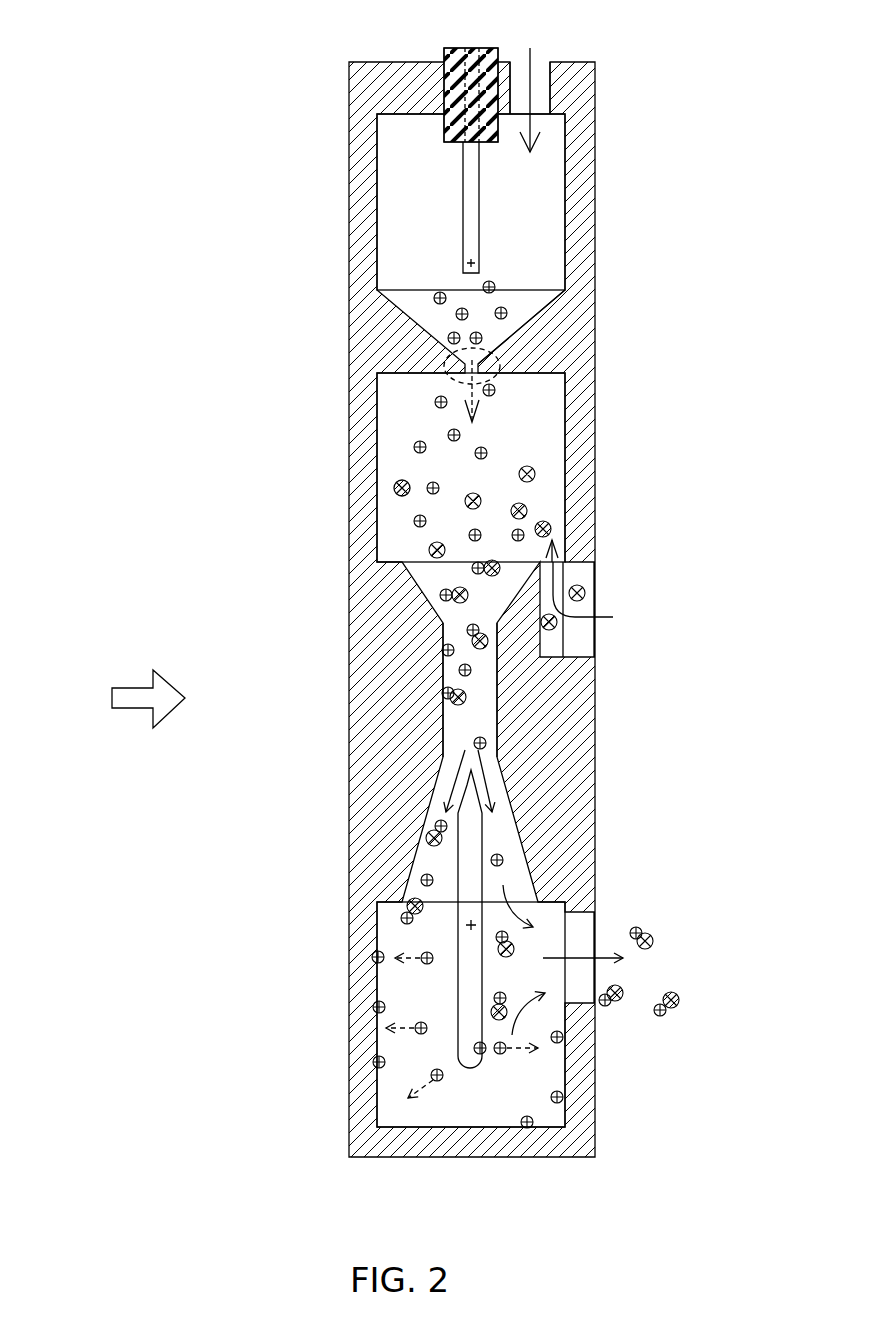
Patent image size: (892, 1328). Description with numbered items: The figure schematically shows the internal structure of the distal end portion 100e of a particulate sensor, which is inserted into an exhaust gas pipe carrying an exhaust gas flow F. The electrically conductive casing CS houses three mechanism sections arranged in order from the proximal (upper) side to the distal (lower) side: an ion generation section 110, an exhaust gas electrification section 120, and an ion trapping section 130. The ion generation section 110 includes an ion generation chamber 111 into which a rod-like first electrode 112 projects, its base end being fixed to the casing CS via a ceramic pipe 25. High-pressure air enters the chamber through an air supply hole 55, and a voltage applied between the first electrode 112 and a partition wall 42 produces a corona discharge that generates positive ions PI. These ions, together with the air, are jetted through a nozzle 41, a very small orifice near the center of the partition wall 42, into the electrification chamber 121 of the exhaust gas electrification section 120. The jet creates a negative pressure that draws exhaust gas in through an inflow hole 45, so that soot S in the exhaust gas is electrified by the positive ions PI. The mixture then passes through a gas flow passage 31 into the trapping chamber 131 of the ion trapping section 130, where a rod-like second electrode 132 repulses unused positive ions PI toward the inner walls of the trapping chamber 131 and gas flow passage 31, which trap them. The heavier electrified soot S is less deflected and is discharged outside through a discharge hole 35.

The distal end portion 100e is at (240, 238).
The ion generation section 110 is at (660, 226).
The ion generation chamber 111 is at (430, 174).
The first electrode 112 is at (482, 212).
The exhaust gas electrification section 120 is at (660, 458).
The electrification chamber 121 is at (422, 410).
The ion trapping section 130 is at (645, 1060).
The trapping chamber 131 is at (490, 1110).
The second electrode 132 is at (442, 942).
The ceramic pipe 25 is at (446, 100).
The gas flow passage 31 is at (455, 632).
The discharge hole 35 is at (582, 916).
The nozzle 41 is at (445, 358).
The partition wall 42 is at (535, 343).
The inflow hole 45 is at (578, 564).
The air supply hole 55 is at (550, 66).
The casing CS is at (592, 722).
The exhaust gas flow F is at (122, 699).
The positive ions PI is at (433, 298).
The soot S is at (394, 490).